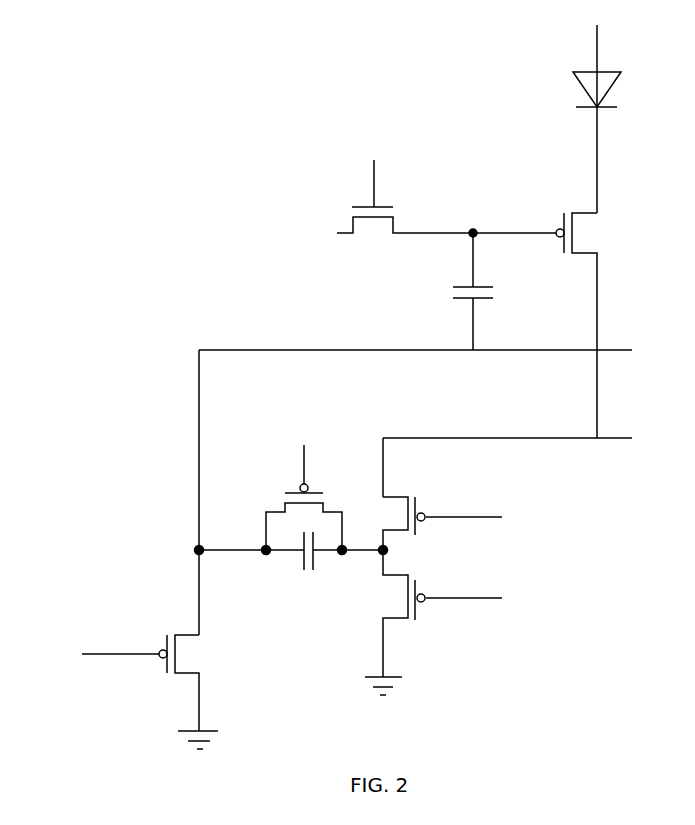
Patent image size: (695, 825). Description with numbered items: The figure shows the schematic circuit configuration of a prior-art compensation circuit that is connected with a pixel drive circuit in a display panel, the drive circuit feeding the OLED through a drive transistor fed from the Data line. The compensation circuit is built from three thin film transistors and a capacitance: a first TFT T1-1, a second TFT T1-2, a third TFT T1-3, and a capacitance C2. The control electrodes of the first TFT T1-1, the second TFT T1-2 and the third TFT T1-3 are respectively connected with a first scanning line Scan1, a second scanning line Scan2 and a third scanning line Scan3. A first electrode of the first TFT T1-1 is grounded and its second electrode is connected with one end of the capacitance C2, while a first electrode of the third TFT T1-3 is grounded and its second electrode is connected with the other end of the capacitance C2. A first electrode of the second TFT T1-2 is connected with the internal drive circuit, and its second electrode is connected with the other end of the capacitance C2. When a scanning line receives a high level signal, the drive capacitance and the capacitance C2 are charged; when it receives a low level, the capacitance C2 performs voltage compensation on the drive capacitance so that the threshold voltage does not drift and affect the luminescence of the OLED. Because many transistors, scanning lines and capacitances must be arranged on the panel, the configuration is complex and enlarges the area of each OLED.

The element OLED is at (613, 119).
The data signal line Data is at (365, 200).
The third TFT T1-3 is at (313, 497).
The second TFT T1-2 is at (423, 622).
The first TFT T1-1 is at (157, 692).
The capacitance C2 is at (288, 560).
The first scanning line Scan1 is at (113, 674).
The second scanning line Scan2 is at (442, 526).
The third scanning line Scan3 is at (462, 618).